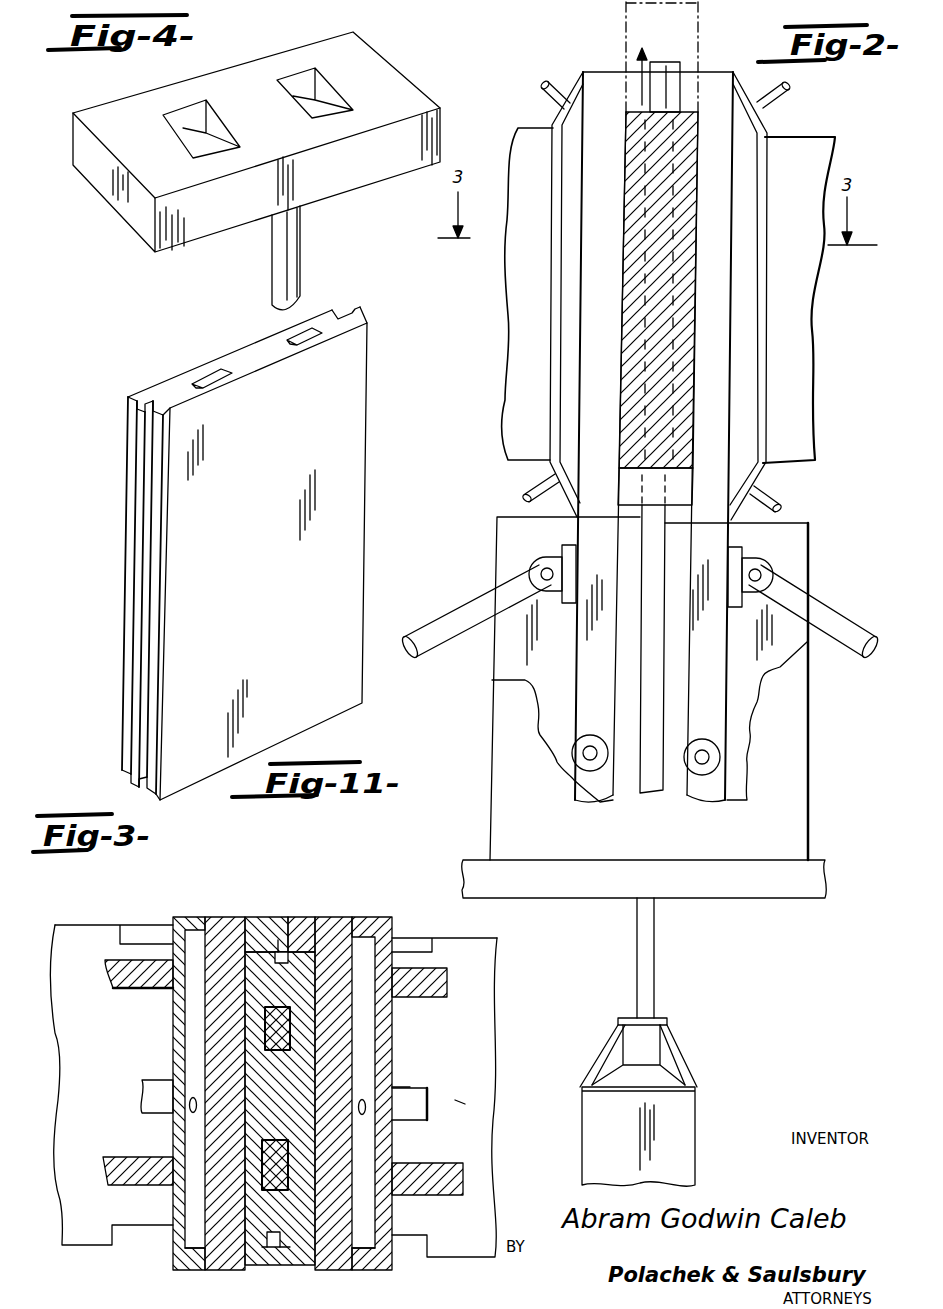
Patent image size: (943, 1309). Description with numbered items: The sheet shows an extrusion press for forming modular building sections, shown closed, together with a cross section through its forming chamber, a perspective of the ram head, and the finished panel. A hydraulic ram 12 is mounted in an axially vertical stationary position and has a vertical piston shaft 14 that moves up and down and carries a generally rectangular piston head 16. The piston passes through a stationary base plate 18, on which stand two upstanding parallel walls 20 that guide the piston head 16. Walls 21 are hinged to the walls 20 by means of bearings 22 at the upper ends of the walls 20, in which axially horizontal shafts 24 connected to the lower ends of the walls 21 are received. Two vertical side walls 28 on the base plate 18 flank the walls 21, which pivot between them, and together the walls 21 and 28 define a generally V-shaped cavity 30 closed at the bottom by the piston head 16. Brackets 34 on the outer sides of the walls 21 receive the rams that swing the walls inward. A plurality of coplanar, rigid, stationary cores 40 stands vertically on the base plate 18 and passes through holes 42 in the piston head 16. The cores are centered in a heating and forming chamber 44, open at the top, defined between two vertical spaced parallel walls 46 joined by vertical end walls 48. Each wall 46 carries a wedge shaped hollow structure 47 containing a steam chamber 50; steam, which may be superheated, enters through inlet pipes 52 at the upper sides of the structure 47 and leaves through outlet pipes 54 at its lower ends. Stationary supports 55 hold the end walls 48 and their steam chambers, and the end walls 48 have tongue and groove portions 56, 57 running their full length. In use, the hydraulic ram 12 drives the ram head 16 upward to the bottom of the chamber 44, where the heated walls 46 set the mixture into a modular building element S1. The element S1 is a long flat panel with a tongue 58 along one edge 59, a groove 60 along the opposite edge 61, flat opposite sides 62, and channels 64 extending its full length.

In FIG. 2, the hydraulic ram 12 is at (598, 1141).
In FIG. 4, the piston shaft 14 is at (287, 264).
In FIG. 2, the piston shaft 14 is at (641, 965).
In FIG. 4, the piston head 16 is at (392, 155).
In FIG. 2, the piston head 16 is at (675, 487).
In FIG. 2, the base plate 18 is at (772, 886).
In FIG. 3, the base plate 18 is at (460, 1102).
In FIG. 2, the upstanding parallel walls 20 is at (585, 778).
In FIG. 2, the hinged walls 21 is at (587, 678).
In FIG. 2, the bearings 22 is at (722, 735).
In FIG. 2, the horizontal shafts 24 is at (705, 758).
In FIG. 2, the vertical side walls 28 is at (788, 708).
In FIG. 2, the V-shaped cavity 30 is at (672, 568).
In FIG. 2, the brackets 34 is at (453, 628).
In FIG. 3, the brackets 34 is at (410, 1087).
In FIG. 2, the cores 40 is at (667, 82).
In FIG. 3, the cores 40 is at (173, 1257).
In FIG. 4, the holes 42 is at (296, 88).
In FIG. 2, the heating and forming chamber 44 is at (688, 395).
In FIG. 3, the heating and forming chamber 44 is at (215, 1249).
In FIG. 2, the vertical spaced parallel walls 46 is at (713, 327).
In FIG. 3, the vertical spaced parallel walls 46 is at (217, 1045).
In FIG. 2, the wedge shaped hollow structure 47 is at (743, 362).
In FIG. 3, the wedge shaped hollow structure 47 is at (390, 1048).
In FIG. 2, the end walls 48 is at (683, 83).
In FIG. 3, the end walls 48 is at (298, 920).
In FIG. 3, the steam chamber 50 is at (196, 940).
In FIG. 2, the inlet pipes 52 is at (545, 95).
In FIG. 2, the outlet pipes 54 is at (543, 483).
In FIG. 2, the stationary supports 55 is at (528, 360).
In FIG. 3, the stationary supports 55 is at (447, 978).
In FIG. 3, the tongue portion 56 is at (275, 953).
In FIG. 3, the groove portion 57 is at (270, 1248).
In FIG. 11, the tongue 58 is at (135, 521).
In FIG. 11, the edge 59 is at (131, 710).
In FIG. 11, the groove 60 is at (348, 313).
In FIG. 11, the opposite edge 61 is at (357, 318).
In FIG. 11, the sides 62 is at (343, 444).
In FIG. 11, the channels 64 is at (204, 374).
In FIG. 11, the modular building element S1 is at (245, 537).